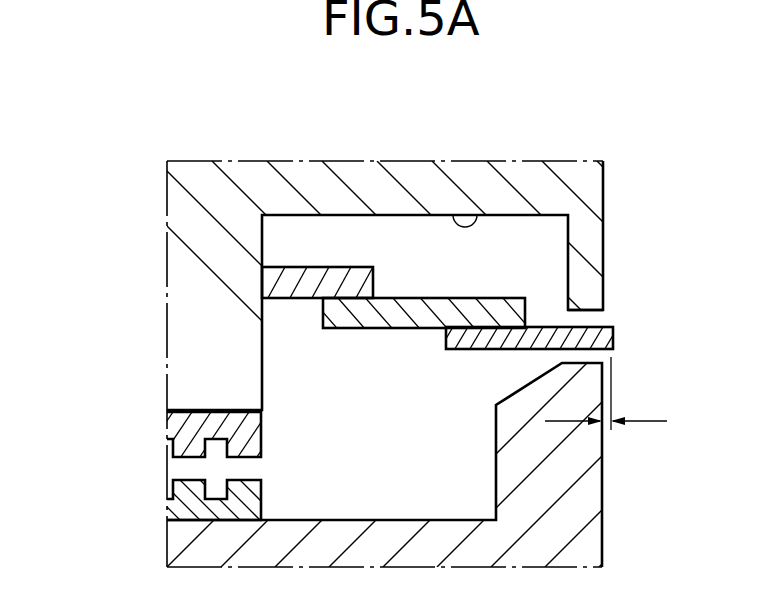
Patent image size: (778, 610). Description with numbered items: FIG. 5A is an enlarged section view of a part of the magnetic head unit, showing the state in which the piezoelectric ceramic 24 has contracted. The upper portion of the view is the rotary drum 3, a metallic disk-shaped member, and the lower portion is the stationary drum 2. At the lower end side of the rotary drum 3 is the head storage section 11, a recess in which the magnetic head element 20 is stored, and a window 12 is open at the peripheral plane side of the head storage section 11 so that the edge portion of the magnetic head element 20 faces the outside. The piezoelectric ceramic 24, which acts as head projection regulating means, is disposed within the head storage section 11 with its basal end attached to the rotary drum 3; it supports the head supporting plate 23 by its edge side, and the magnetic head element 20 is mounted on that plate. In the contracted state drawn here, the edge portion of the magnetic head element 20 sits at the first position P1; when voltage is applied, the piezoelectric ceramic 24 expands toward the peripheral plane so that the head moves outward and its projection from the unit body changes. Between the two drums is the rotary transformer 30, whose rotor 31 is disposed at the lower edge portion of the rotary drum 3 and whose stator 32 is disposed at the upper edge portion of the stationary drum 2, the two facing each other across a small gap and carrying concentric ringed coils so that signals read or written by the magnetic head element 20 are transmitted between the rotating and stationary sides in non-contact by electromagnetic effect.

The stationary drum 2 is at (585, 512).
The rotary drum 3 is at (590, 189).
The head storage section 11 is at (476, 222).
The window 12 is at (582, 318).
The magnetic head element 20 is at (613, 340).
The head supporting plate 23 is at (342, 314).
The piezoelectric ceramic 24 is at (272, 281).
The rotary transformer 30 is at (164, 462).
The rotor 31 is at (182, 424).
The stator 32 is at (195, 500).
The first position P1 is at (608, 393).